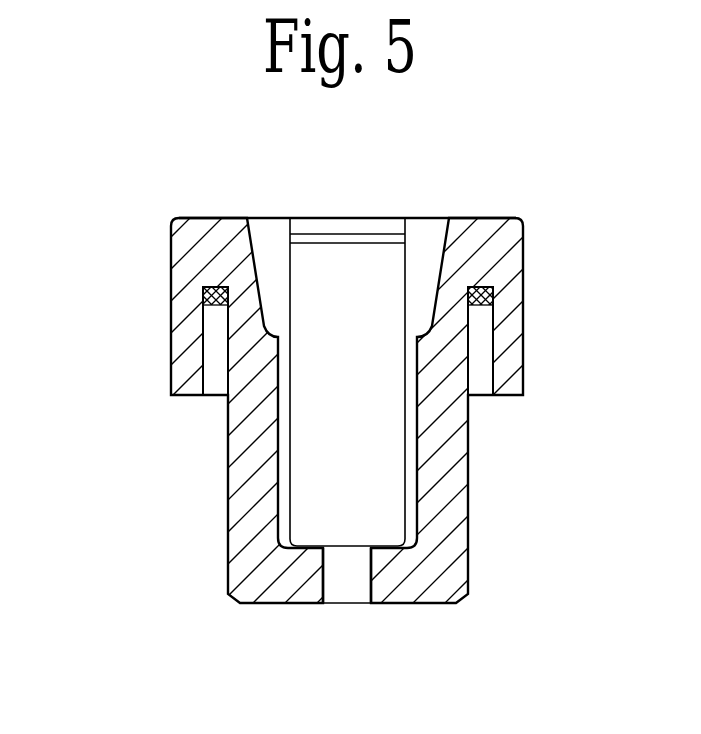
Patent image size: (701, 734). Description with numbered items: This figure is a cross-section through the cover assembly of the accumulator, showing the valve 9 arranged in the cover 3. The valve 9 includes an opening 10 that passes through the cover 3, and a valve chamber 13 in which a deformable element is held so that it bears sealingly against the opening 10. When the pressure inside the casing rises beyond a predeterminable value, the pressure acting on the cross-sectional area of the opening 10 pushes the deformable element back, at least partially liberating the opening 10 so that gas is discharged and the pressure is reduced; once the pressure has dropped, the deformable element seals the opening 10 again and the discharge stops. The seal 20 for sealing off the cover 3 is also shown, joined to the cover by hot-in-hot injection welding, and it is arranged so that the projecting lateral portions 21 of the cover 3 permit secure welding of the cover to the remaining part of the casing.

The valve 9 is at (318, 198).
The cover 3 is at (187, 337).
The seal 20 is at (205, 288).
The projecting lateral portions 21 is at (510, 348).
The valve chamber 13 is at (250, 487).
The opening 10 is at (361, 585).